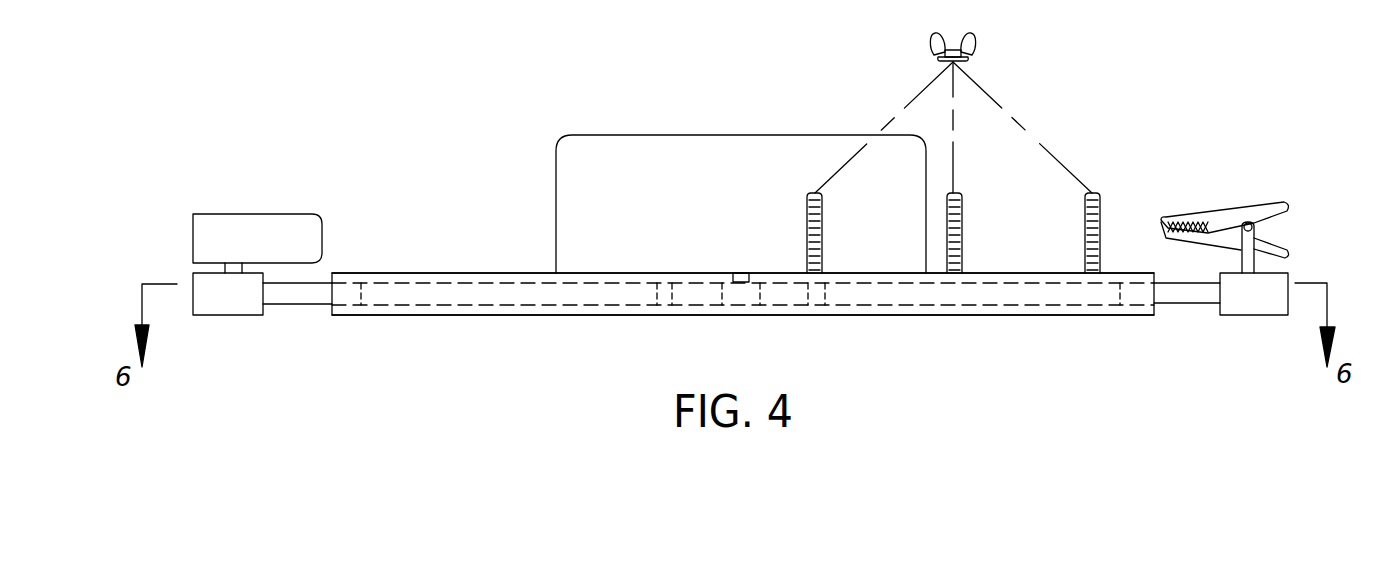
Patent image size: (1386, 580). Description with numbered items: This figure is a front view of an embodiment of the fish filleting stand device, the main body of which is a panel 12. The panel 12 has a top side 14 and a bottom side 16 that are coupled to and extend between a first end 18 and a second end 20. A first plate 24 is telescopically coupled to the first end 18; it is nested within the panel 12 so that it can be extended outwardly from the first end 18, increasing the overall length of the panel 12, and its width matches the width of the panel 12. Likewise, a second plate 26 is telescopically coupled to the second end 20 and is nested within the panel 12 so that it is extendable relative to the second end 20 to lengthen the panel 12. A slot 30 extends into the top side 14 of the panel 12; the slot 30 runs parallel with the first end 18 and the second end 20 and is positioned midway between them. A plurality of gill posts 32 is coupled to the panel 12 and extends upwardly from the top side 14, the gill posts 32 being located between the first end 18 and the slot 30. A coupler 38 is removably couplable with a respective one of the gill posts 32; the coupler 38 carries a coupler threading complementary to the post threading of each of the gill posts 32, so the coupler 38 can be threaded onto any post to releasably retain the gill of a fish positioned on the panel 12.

The panel 12 is at (518, 278).
The top side 14 is at (451, 273).
The bottom side 16 is at (532, 315).
The first end 18 is at (1154, 308).
The second end 20 is at (332, 312).
The first plate 24 is at (1253, 305).
The second plate 26 is at (220, 305).
The slot 30 is at (739, 298).
The gill posts 32 is at (1095, 215).
The coupler 38 is at (970, 43).